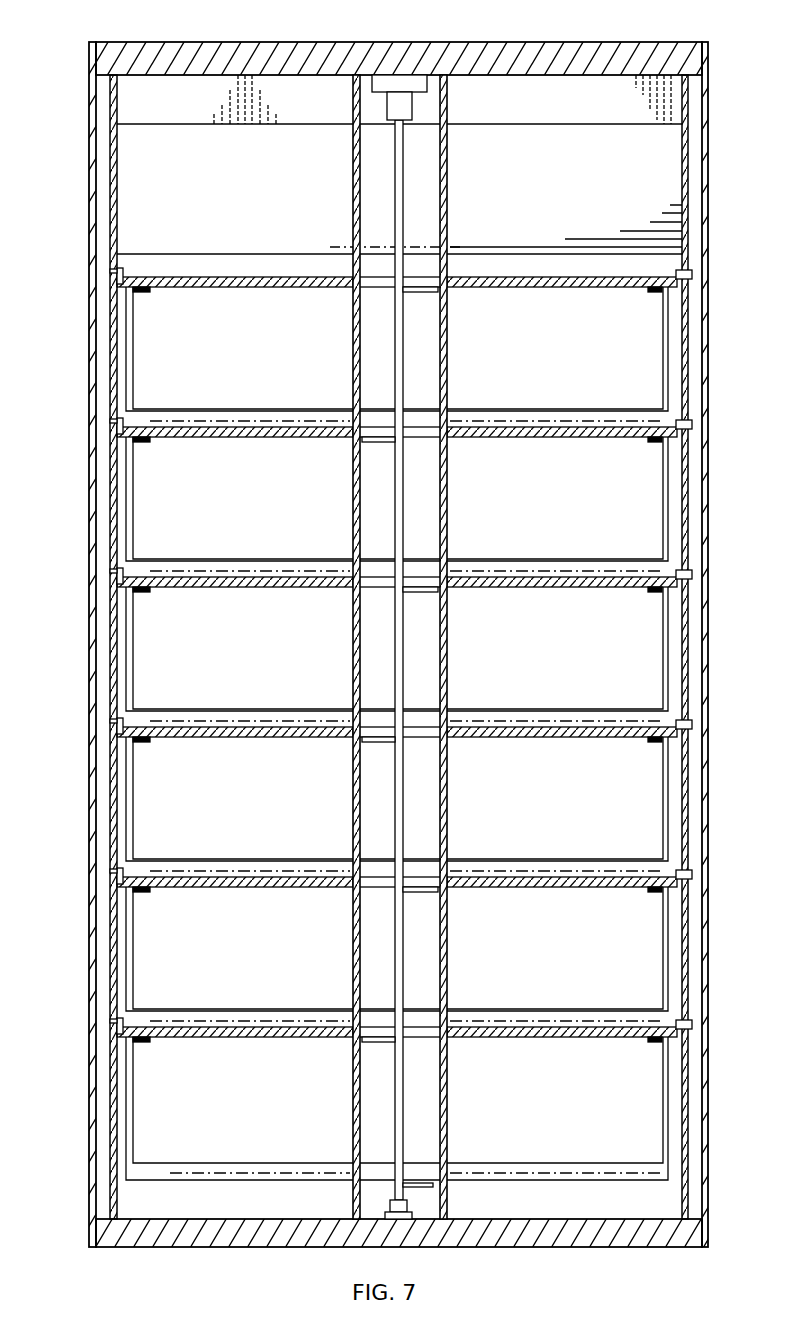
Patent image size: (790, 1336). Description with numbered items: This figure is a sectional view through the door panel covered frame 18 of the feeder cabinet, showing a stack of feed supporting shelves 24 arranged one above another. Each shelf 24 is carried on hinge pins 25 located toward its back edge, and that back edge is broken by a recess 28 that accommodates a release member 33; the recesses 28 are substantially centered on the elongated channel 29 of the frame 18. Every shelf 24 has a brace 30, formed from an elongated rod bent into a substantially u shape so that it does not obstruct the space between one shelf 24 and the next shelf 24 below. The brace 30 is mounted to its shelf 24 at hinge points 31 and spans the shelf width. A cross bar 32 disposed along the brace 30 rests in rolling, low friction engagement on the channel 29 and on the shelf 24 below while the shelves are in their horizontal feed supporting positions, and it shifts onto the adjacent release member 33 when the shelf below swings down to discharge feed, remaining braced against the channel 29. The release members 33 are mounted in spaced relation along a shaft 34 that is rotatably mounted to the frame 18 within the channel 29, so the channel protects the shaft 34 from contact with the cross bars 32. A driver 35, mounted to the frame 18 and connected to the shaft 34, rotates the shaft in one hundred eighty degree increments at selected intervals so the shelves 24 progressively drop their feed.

The frame 18 is at (649, 28).
The shelf 24 is at (499, 266).
The hinge pins 25 is at (110, 271).
The recess 28 is at (381, 281).
The elongated channel 29 is at (450, 786).
The brace 30 is at (148, 348).
The hinge points 31 is at (655, 294).
The cross bar 32 is at (247, 258).
The release member 33 is at (428, 293).
The shaft 34 is at (397, 193).
The driver 35 is at (412, 100).